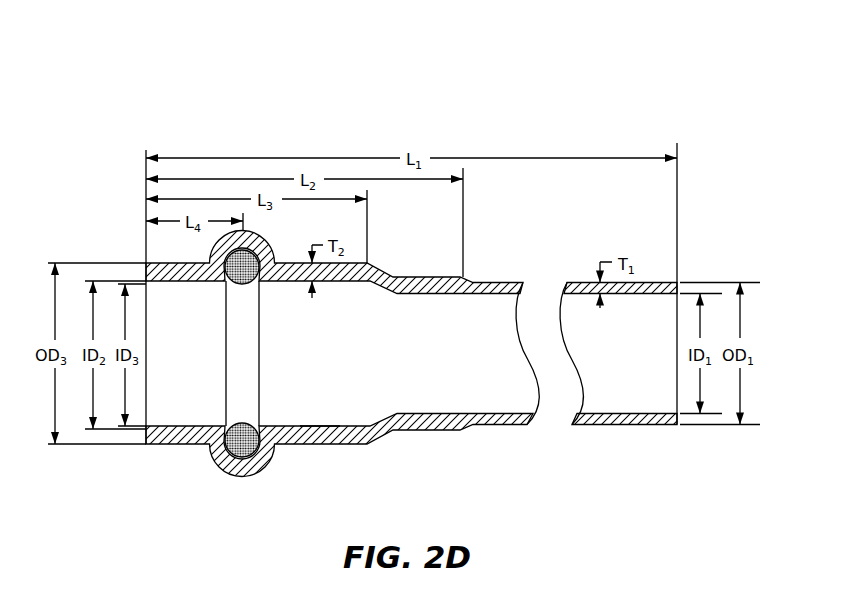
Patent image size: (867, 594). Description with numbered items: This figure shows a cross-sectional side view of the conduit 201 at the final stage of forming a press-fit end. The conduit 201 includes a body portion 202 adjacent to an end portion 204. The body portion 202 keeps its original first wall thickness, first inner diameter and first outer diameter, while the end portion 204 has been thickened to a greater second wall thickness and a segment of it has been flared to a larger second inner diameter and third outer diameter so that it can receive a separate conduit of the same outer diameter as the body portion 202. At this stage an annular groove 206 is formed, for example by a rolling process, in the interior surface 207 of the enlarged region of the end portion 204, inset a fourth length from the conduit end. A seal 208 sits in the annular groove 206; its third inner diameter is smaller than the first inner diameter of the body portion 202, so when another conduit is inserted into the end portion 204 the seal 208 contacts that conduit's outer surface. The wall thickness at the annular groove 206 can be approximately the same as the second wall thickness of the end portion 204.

The conduit 201 is at (684, 118).
The body portion 202 is at (645, 450).
The end portion 204 is at (441, 452).
The annular groove 206 is at (261, 446).
The interior surface 207 is at (305, 427).
The seal 208 is at (247, 272).